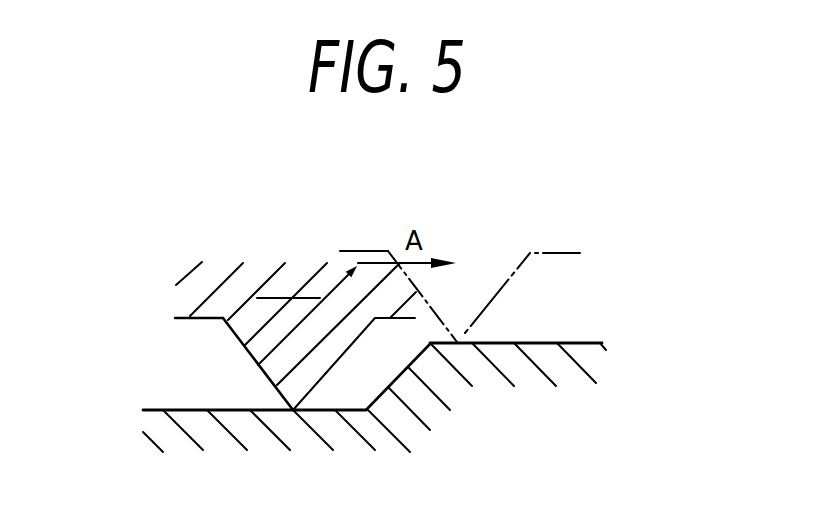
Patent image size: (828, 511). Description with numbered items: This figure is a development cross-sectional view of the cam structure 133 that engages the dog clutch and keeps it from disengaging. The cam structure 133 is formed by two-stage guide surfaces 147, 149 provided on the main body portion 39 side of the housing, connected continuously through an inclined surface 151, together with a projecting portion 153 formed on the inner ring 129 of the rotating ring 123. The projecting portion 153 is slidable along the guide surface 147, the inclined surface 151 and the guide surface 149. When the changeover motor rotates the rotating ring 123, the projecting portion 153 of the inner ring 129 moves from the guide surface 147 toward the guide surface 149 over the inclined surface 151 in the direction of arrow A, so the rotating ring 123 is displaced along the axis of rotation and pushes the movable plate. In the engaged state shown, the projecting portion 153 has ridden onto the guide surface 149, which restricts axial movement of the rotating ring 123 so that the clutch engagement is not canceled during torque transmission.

The rotating ring 123 is at (216, 256).
The inner ring 129 is at (193, 293).
The projecting portion 153 is at (252, 358).
The guide surface 147 is at (222, 410).
The inclined surface 151 is at (405, 375).
The guide surface 149 is at (540, 343).
The main body portion 39 is at (565, 380).
The cam structure 133 is at (608, 272).